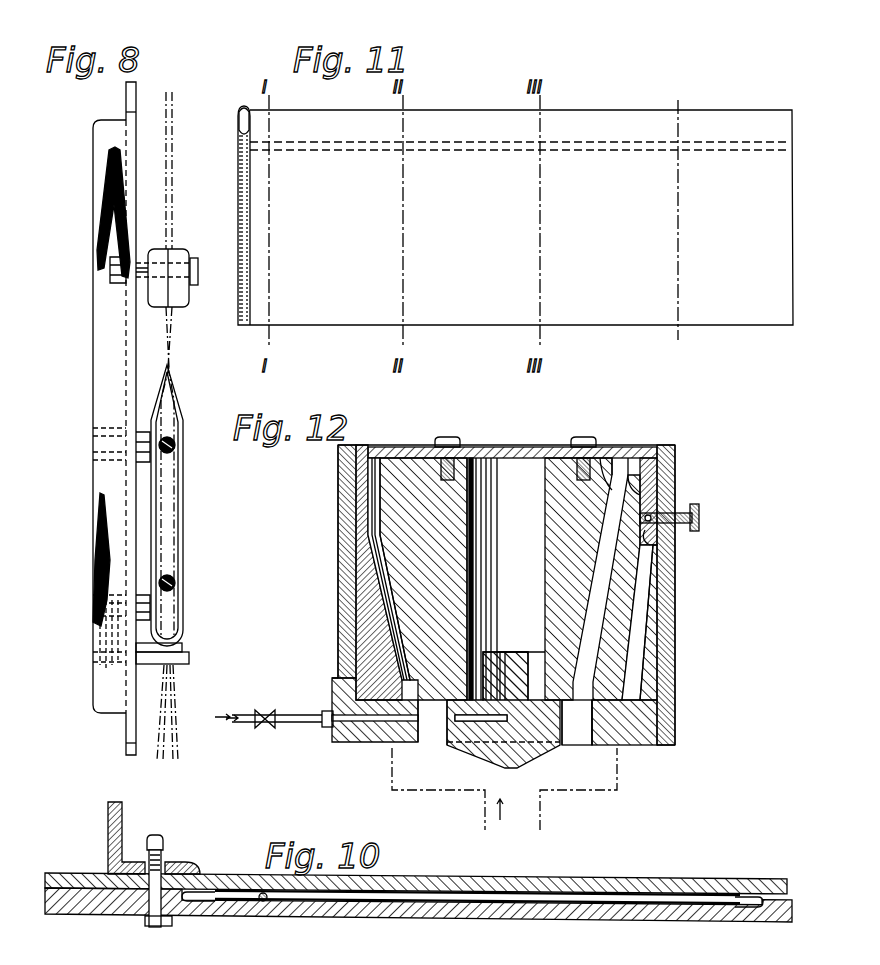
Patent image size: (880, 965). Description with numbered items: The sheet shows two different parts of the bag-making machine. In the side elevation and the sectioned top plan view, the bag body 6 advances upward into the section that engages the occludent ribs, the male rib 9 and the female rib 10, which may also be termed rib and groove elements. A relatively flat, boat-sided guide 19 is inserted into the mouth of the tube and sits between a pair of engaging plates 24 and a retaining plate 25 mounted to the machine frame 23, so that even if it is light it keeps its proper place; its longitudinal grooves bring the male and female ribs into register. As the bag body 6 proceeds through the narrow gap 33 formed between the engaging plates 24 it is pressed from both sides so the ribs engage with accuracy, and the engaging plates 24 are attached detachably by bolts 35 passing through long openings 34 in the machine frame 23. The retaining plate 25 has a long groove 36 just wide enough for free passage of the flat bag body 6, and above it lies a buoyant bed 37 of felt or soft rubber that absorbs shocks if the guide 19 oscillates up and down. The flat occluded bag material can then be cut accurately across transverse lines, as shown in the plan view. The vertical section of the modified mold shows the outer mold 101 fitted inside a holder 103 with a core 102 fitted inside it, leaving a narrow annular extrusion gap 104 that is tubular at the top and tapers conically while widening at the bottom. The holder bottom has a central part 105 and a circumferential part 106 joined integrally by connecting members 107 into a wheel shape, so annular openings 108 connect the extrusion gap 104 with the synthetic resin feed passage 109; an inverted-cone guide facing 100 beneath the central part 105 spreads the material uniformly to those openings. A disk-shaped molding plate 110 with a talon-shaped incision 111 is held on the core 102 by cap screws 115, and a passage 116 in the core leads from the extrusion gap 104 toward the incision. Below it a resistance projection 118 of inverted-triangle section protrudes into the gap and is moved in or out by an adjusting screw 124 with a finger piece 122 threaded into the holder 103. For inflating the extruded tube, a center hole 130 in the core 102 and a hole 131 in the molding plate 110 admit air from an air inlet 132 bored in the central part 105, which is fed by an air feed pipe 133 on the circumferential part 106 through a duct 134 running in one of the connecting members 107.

In FIG. 8, the bag body 6 is at (176, 350).
In FIG. 11, the bag body 6 is at (598, 158).
In FIG. 10, the bag body 6 is at (412, 893).
In FIG. 11, the male occludent rib 9 is at (472, 142).
In FIG. 10, the male occludent rib 9 is at (262, 891).
In FIG. 11, the female occludent rib 10 is at (238, 142).
In FIG. 10, the female occludent rib 10 is at (265, 902).
In FIG. 8, the guide 19 is at (170, 506).
In FIG. 8, the machine frame 23 is at (97, 173).
In FIG. 10, the machine frame 23 is at (122, 812).
In FIG. 8, the engaging plates 24 is at (181, 254).
In FIG. 10, the engaging plates 24 is at (575, 877).
In FIG. 8, the retaining plate 25 is at (190, 660).
In FIG. 10, the narrow gap 33 is at (205, 905).
In FIG. 10, the long openings 34 is at (176, 862).
In FIG. 8, the bolts 35 is at (198, 280).
In FIG. 10, the bolts 35 is at (157, 927).
In FIG. 8, the long groove 36 is at (173, 672).
In FIG. 8, the buoyant bed 37 is at (183, 646).
In FIG. 12, the guide facing 100 is at (534, 758).
In FIG. 12, the outer mold 101 is at (368, 578).
In FIG. 12, the core 102 is at (388, 490).
In FIG. 12, the holder 103 is at (664, 600).
In FIG. 12, the extrusion gap 104 is at (395, 628).
In FIG. 12, the central part 105 is at (486, 750).
In FIG. 12, the circumferential part 106 is at (640, 746).
In FIG. 12, the connecting members 107 is at (584, 730).
In FIG. 12, the annular openings 108 is at (433, 742).
In FIG. 12, the synthetic resin feed passage 109 is at (405, 795).
In FIG. 12, the molding plate 110 is at (428, 446).
In FIG. 12, the talon-shaped incision 111 is at (620, 455).
In FIG. 12, the cap screws 115 is at (452, 436).
In FIG. 12, the passage 116 is at (640, 470).
In FIG. 12, the resistance projection 118 is at (650, 540).
In FIG. 12, the finger piece 122 is at (698, 530).
In FIG. 12, the adjusting screw 124 is at (688, 512).
In FIG. 12, the center hole 130 is at (522, 470).
In FIG. 12, the hole 131 is at (500, 452).
In FIG. 12, the air inlet 132 is at (506, 652).
In FIG. 12, the air feed pipe 133 is at (301, 724).
In FIG. 12, the duct 134 is at (370, 723).